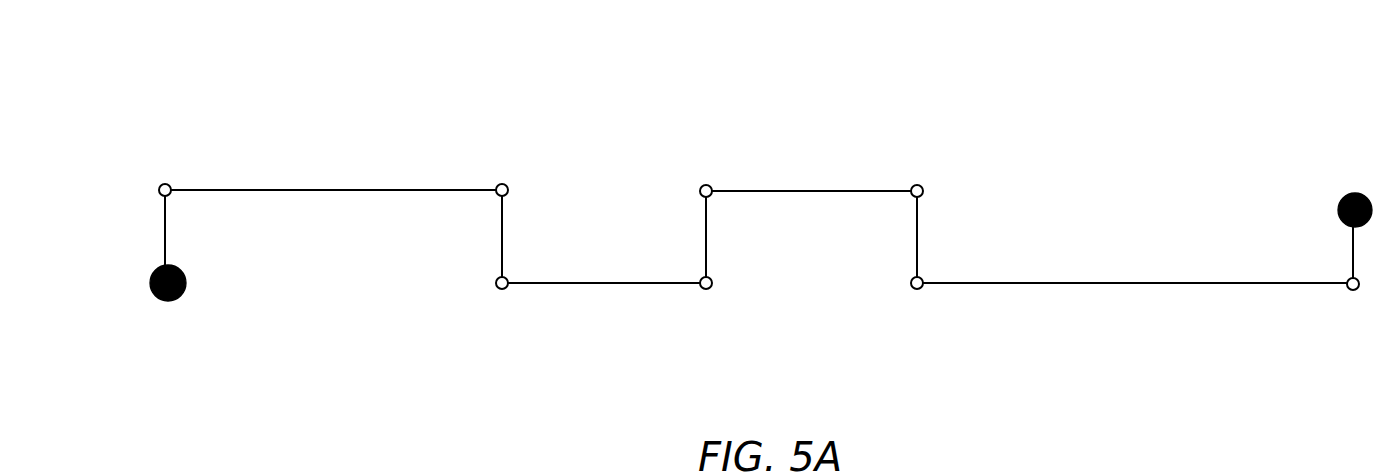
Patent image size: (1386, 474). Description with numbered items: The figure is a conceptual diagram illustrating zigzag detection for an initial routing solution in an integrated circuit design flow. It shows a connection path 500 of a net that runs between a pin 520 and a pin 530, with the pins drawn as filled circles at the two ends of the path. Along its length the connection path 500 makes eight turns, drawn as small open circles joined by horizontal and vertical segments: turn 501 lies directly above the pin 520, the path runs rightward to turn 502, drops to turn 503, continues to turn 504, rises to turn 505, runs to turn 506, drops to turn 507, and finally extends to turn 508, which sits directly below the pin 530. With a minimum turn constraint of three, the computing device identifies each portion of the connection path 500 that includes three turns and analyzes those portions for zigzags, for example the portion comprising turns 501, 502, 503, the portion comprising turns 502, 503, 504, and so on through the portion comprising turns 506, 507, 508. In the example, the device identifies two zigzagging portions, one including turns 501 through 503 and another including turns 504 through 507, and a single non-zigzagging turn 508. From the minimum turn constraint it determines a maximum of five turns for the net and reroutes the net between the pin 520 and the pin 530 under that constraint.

The connection path 500 is at (145, 64).
The turn 501 is at (160, 186).
The turn 502 is at (507, 184).
The turn 503 is at (507, 278).
The turn 504 is at (700, 278).
The turn 505 is at (700, 186).
The turn 506 is at (922, 185).
The turn 507 is at (922, 278).
The turn 508 is at (1347, 279).
The pin 520 is at (154, 273).
The pin 530 is at (1342, 194).